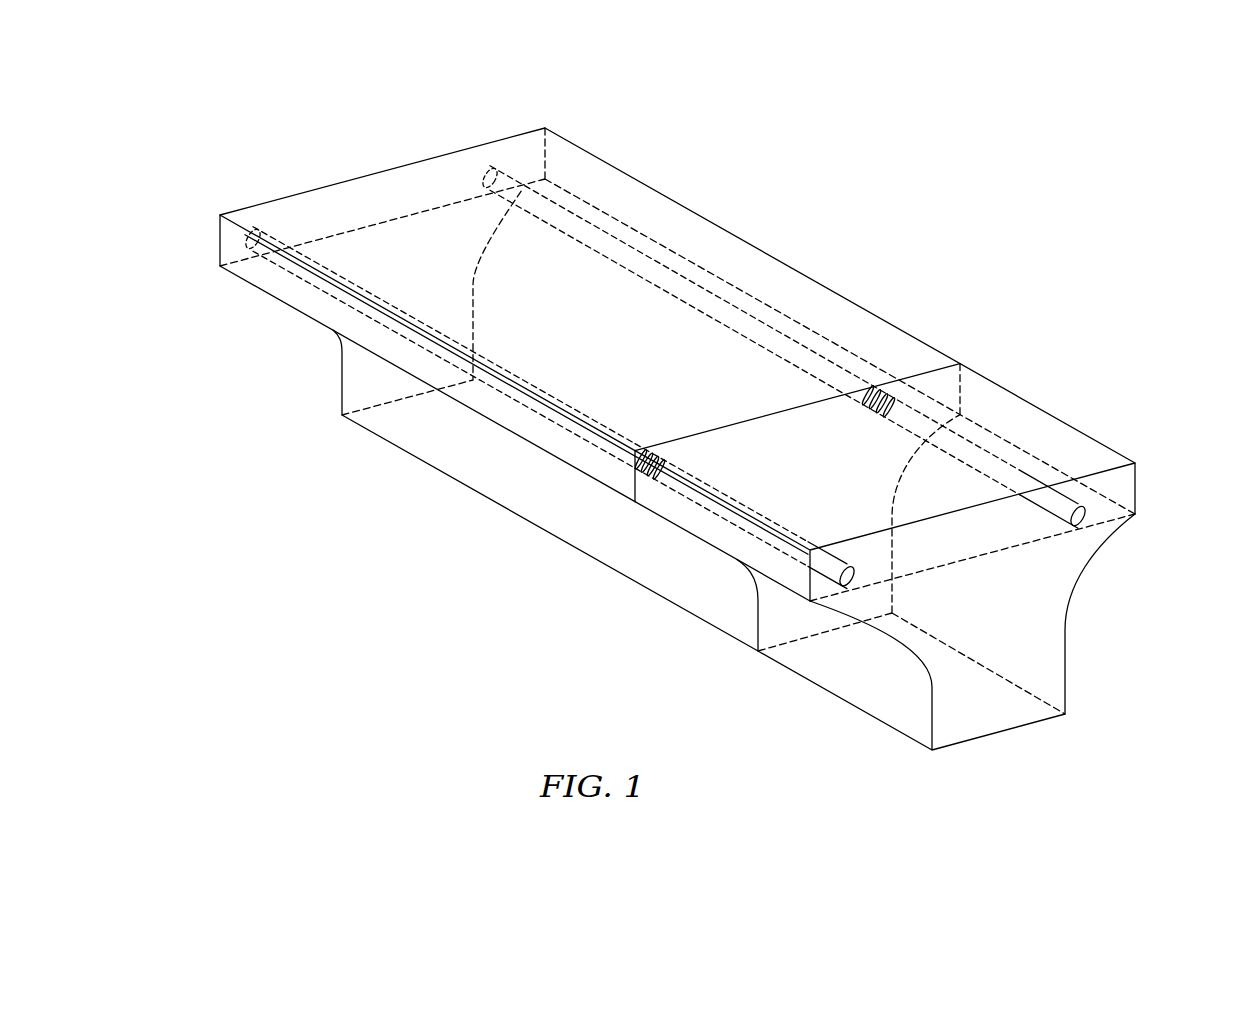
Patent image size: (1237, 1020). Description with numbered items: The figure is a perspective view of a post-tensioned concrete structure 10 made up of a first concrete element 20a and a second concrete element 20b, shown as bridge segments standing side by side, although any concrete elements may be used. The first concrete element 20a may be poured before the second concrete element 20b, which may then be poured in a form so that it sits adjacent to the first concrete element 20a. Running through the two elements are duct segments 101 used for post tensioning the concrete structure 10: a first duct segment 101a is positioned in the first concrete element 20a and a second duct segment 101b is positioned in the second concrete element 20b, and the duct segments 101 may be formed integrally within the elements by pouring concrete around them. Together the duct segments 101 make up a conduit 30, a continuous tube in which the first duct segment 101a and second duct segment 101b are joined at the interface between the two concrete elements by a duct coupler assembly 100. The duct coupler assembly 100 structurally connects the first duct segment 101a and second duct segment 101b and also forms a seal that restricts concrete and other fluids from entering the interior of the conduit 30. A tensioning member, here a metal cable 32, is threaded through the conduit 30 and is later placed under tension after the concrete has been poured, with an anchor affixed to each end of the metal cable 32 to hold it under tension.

The post-tensioned concrete structure 10 is at (724, 178).
The conduit 30 is at (283, 279).
The metal cable 32 is at (250, 221).
The duct coupler assembly 100 is at (910, 392).
The duct segments 101 is at (585, 213).
The first duct segment 101a is at (560, 437).
The second duct segment 101b is at (737, 528).
The first concrete element 20a is at (770, 254).
The second concrete element 20b is at (1097, 446).